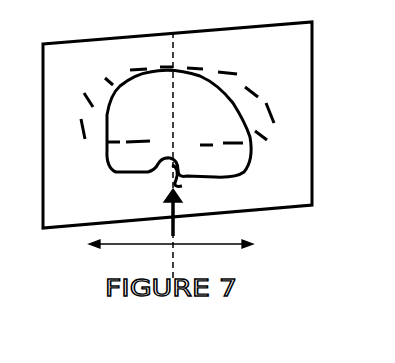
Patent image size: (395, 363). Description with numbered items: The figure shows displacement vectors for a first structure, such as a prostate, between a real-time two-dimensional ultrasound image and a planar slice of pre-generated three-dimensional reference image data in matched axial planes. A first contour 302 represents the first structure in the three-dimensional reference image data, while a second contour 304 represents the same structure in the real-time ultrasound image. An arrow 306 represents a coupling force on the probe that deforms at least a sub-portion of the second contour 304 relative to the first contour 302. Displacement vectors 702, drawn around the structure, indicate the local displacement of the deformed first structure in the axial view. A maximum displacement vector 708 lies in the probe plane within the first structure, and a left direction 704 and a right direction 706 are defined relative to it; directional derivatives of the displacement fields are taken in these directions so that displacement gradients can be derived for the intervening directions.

The first contour 302 is at (228, 177).
The second contour 304 is at (232, 86).
The arrow 306 is at (178, 223).
The displacement vectors 702 is at (123, 88).
The left direction 704 is at (156, 247).
The right direction 706 is at (187, 247).
The maximum displacement vector 708 is at (175, 149).